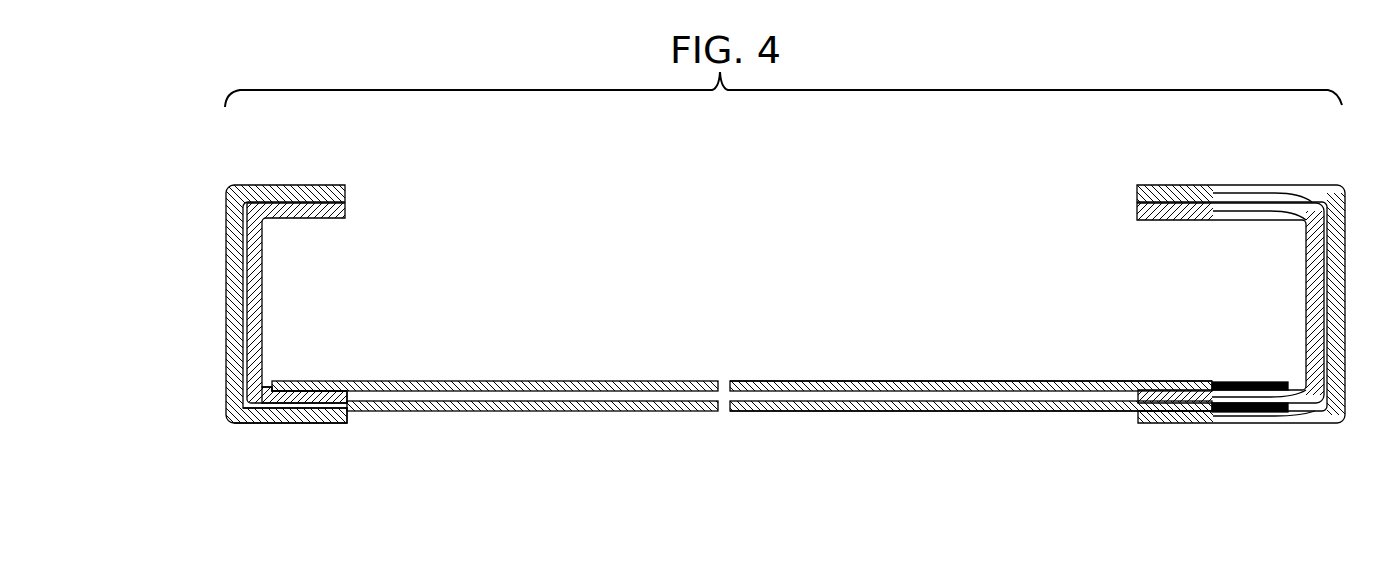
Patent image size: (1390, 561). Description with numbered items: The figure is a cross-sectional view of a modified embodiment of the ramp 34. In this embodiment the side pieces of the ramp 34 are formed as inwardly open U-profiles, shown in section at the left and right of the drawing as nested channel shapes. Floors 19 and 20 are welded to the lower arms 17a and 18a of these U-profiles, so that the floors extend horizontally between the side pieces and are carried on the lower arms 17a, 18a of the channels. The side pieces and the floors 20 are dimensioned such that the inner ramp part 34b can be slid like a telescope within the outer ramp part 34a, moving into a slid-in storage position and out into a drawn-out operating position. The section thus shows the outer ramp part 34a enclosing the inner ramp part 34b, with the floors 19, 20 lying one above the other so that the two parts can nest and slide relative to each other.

The lower arm 17a is at (287, 424).
The lower arm 18a is at (315, 393).
The floor 19 is at (548, 412).
The floor 20 is at (482, 382).
The ramp 34 is at (858, 421).
The outer ramp part 34a is at (975, 412).
The inner ramp part 34b is at (865, 371).